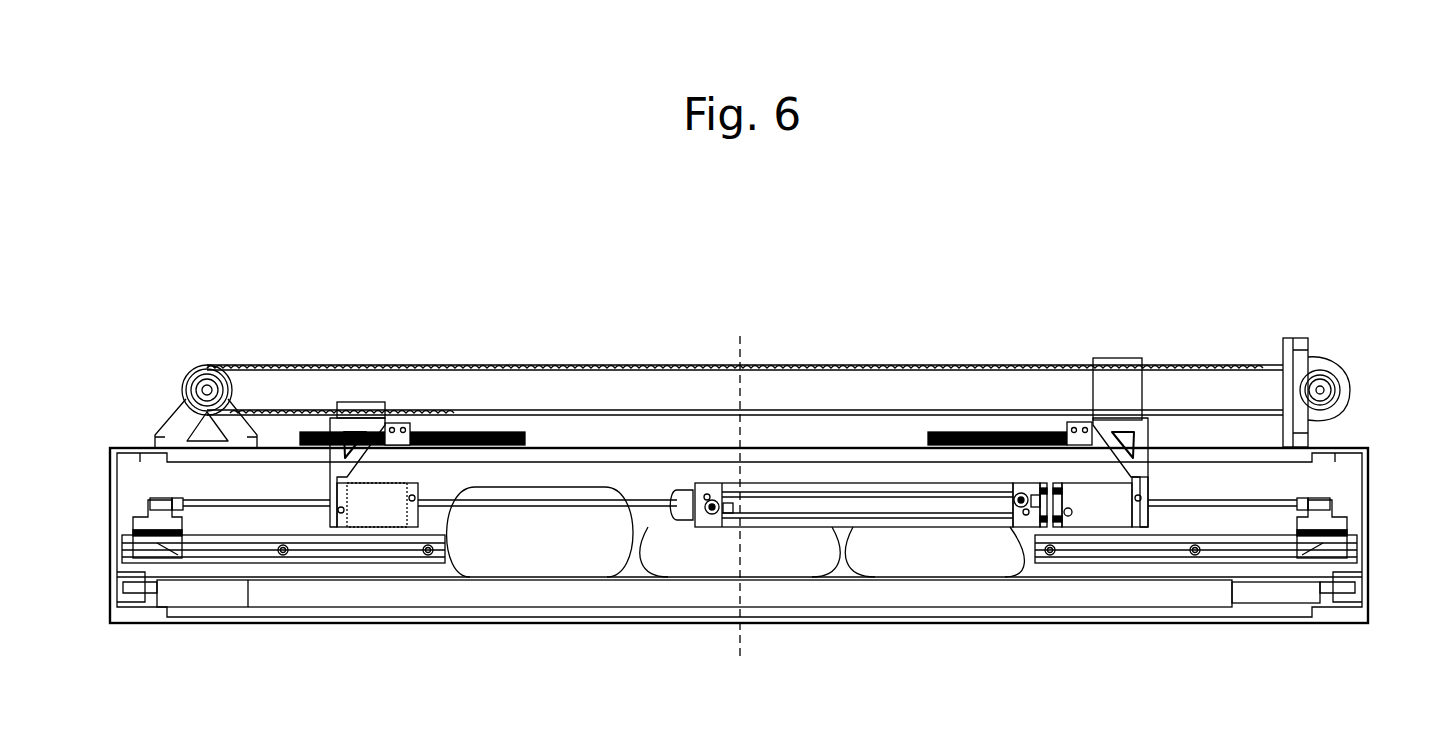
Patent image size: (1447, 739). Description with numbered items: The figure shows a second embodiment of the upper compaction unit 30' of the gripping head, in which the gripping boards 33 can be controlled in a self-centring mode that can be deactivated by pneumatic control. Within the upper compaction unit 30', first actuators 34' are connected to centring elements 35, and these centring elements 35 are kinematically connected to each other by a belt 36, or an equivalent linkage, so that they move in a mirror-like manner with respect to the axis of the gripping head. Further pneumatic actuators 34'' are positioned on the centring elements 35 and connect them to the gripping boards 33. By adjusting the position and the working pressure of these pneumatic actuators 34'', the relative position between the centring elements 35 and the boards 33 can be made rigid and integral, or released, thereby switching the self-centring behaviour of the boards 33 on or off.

The upper compaction unit 30' is at (716, 467).
The gripping boards 33 is at (143, 530).
The first actuators 34' is at (901, 419).
The pneumatic actuators 34'' is at (743, 420).
The centring elements 35 is at (356, 417).
The belt 36 is at (609, 362).